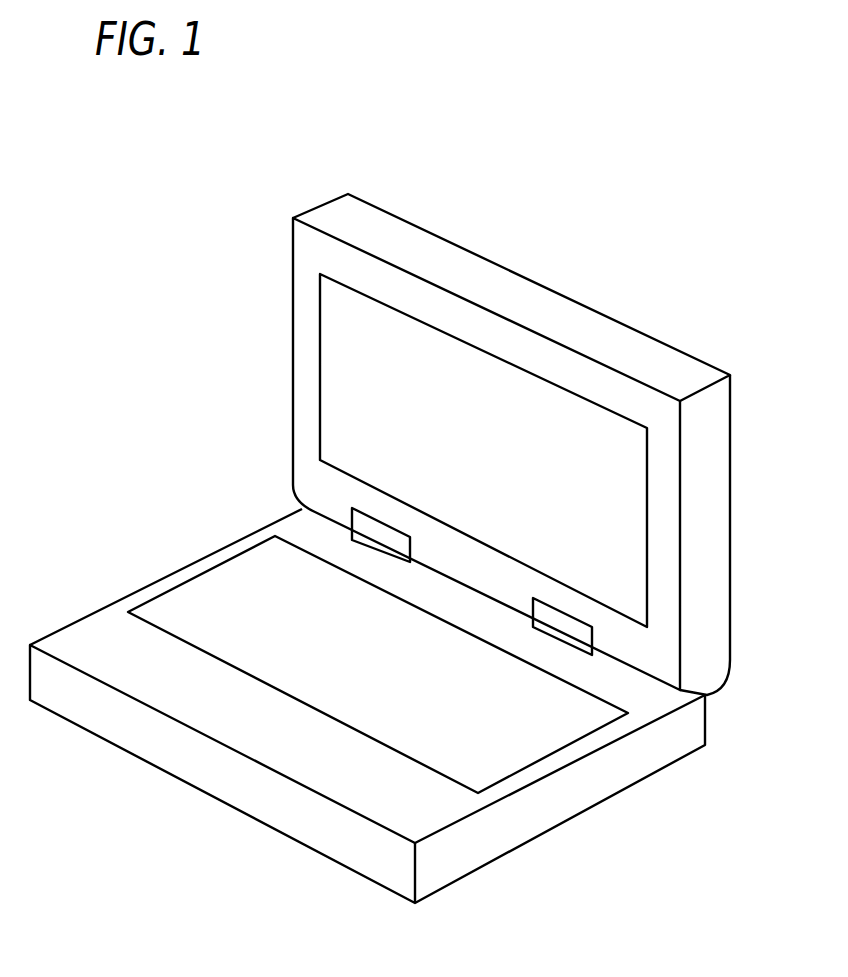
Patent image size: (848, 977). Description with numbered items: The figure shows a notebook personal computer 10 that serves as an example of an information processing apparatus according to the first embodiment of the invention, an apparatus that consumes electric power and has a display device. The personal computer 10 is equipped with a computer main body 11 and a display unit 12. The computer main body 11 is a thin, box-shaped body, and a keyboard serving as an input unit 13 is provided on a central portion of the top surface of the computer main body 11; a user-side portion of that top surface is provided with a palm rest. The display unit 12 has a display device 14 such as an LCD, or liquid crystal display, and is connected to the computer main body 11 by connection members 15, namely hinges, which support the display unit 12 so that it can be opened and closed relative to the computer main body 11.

The personal computer 10 is at (583, 223).
The computer main body 11 is at (181, 569).
The display unit 12 is at (292, 350).
The input unit 13 is at (515, 733).
The display device 14 is at (650, 522).
The connection members 15 is at (380, 532).